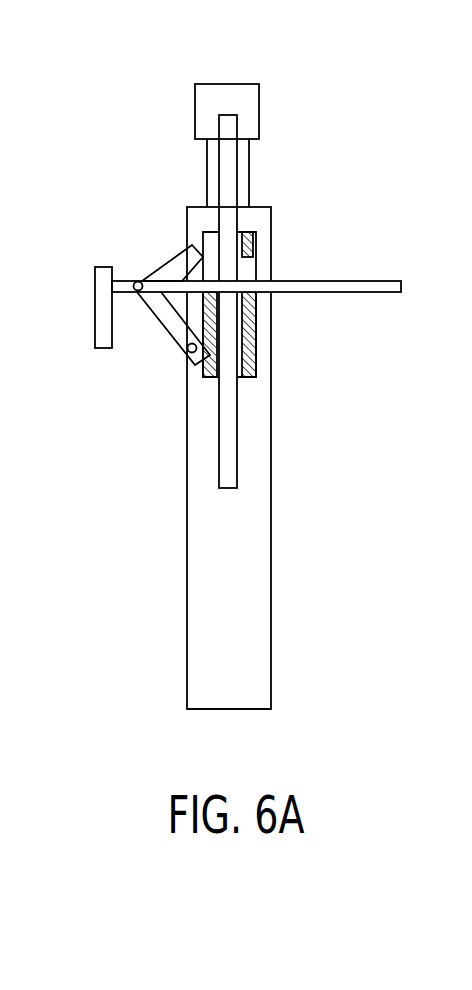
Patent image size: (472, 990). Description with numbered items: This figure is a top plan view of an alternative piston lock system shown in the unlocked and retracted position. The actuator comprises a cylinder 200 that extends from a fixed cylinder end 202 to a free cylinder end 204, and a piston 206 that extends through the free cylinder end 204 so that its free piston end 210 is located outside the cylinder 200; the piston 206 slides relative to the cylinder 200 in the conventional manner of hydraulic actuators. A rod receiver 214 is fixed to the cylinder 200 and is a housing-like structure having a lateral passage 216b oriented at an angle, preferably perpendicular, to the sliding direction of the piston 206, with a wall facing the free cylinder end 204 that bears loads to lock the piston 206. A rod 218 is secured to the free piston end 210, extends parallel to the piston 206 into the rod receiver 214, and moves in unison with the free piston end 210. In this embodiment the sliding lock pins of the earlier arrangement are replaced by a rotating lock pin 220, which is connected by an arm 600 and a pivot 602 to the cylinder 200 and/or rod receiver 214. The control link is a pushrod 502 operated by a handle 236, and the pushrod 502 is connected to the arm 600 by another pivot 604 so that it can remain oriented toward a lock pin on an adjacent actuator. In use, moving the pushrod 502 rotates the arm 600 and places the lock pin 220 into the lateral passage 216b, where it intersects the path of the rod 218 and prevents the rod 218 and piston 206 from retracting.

The cylinder 200 is at (215, 570).
The fixed cylinder end 202 is at (227, 710).
The free cylinder end 204 is at (199, 205).
The piston 206 is at (250, 178).
The free piston end 210 is at (222, 100).
The rod receiver 214 is at (247, 332).
The lateral passage 216b is at (248, 268).
The rod 218 is at (228, 427).
The lock pin 220 is at (173, 267).
The handle 236 is at (107, 305).
The pushrod 502 is at (343, 288).
The arm 600 is at (163, 317).
The pivot 602 is at (187, 352).
The pivot 604 is at (138, 277).